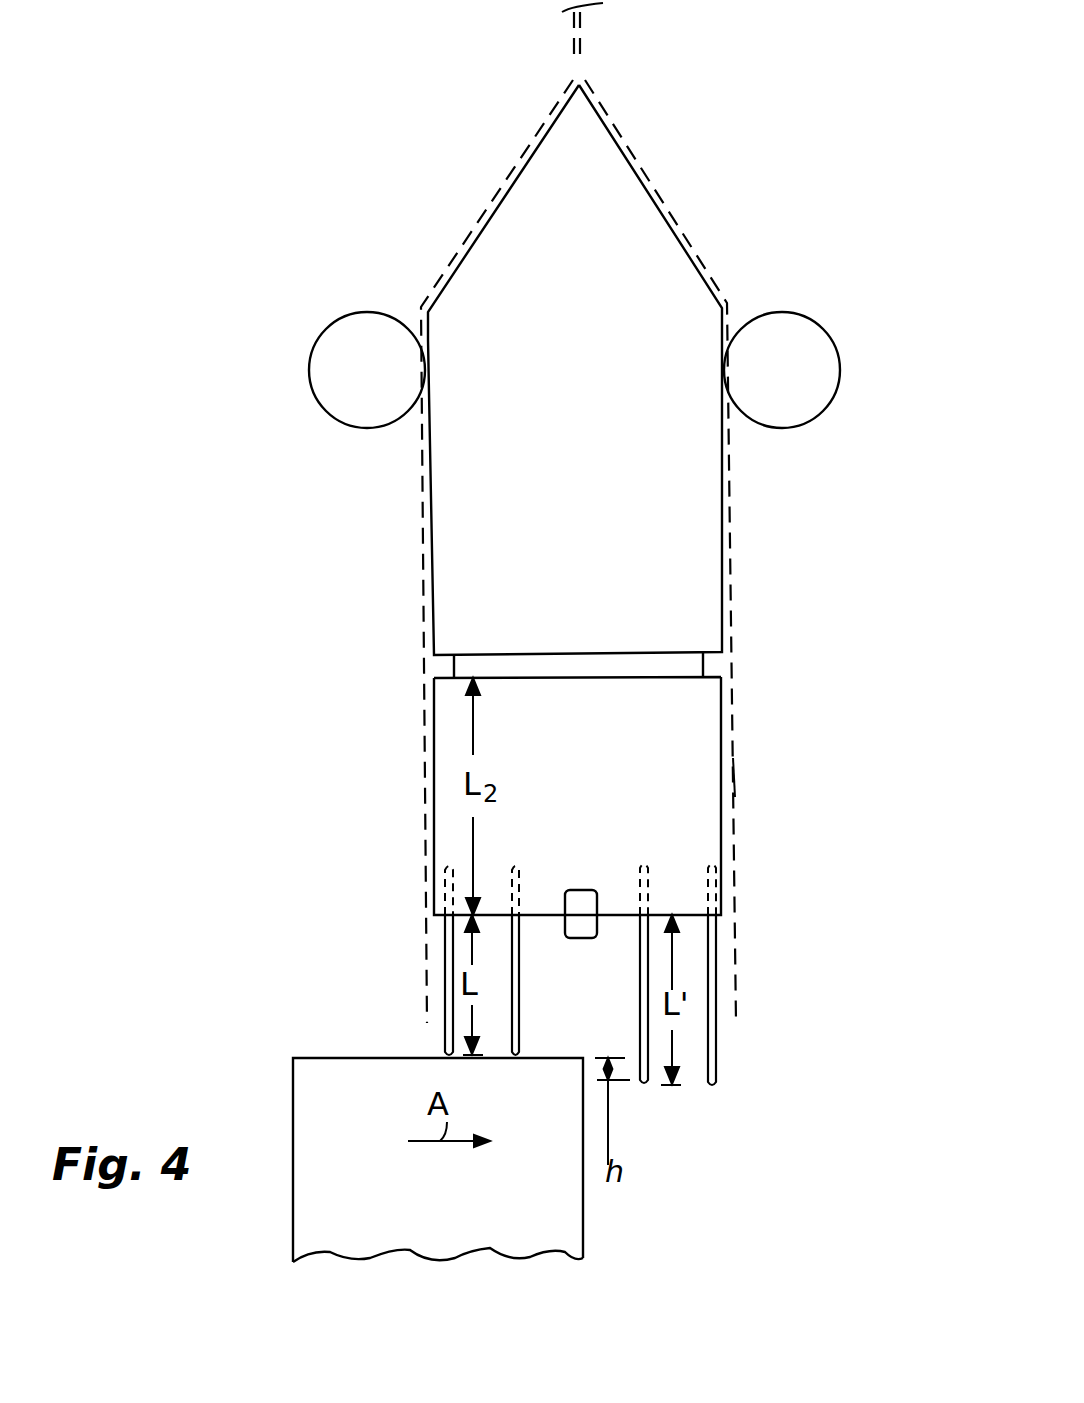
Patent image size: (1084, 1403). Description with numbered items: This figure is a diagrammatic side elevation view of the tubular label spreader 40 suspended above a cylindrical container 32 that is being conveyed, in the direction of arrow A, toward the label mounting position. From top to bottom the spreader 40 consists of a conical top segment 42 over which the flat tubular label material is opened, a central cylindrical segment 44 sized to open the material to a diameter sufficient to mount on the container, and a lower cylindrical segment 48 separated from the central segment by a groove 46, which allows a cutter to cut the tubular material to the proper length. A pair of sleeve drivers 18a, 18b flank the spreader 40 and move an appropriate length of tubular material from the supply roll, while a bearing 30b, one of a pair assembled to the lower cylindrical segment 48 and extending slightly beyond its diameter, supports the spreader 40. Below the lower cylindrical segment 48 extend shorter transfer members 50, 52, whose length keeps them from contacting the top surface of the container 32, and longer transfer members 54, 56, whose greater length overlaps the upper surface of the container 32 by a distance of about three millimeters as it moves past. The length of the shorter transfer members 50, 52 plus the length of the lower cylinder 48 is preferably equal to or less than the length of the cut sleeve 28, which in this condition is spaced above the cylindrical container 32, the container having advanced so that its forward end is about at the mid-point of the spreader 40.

The sleeve driver 18a is at (342, 412).
The sleeve driver 18b is at (818, 403).
The cut sleeve 28 is at (735, 773).
The bearing 30b is at (577, 932).
The cylindrical container 32 is at (448, 1217).
The spreader 40 is at (845, 543).
The conical top segment 42 is at (293, 83).
The cylindrical segment 44 is at (293, 318).
The groove 46 is at (442, 668).
The cylindrical segment 48 is at (325, 686).
The transfer member 50 is at (442, 1040).
The transfer member 52 is at (520, 1022).
The transfer member 54 is at (645, 1083).
The transfer member 56 is at (716, 1068).